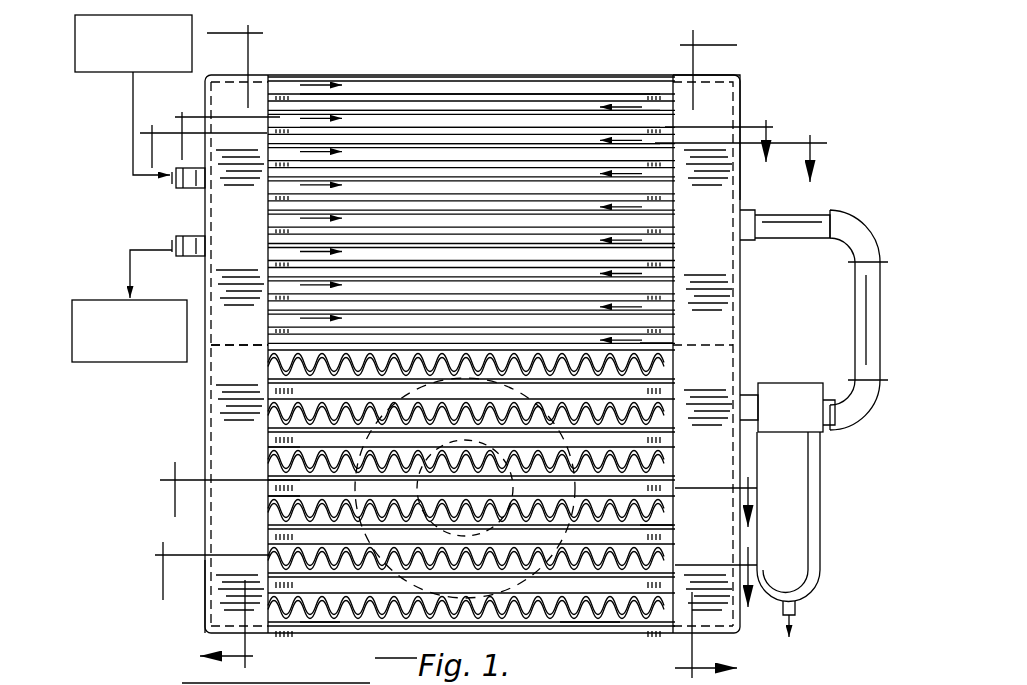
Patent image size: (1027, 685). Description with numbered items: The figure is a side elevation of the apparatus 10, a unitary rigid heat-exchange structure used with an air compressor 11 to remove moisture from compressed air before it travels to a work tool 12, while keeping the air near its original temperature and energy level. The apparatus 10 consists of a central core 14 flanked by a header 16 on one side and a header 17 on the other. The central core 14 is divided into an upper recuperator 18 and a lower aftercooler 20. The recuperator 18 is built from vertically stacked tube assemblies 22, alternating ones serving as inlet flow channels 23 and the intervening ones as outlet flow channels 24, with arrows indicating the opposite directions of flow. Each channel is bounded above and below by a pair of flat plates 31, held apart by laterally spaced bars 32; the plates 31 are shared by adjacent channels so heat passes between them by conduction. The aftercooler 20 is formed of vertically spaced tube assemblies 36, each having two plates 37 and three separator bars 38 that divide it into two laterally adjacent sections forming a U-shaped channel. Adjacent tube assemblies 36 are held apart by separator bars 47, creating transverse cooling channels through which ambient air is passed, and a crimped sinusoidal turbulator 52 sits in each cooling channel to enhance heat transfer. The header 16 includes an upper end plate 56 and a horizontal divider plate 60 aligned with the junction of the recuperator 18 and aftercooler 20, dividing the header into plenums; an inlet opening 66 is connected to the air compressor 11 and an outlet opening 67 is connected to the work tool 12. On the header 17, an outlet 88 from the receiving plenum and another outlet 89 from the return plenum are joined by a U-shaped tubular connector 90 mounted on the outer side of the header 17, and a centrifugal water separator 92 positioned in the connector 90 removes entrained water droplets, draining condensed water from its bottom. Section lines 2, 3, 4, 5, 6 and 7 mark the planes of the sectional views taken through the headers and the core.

The section line 2- 2 is at (246, 348).
The section line 3- 3 is at (692, 356).
The section line 4- 4 is at (471, 124).
The section line 5- 5 is at (483, 138).
The section line 6- 6 is at (458, 480).
The section line 7- 7 is at (456, 560).
The apparatus 10 is at (175, 412).
The air compressor 11 is at (78, 78).
The work tool 12 is at (100, 298).
The central core 14 is at (471, 76).
The header 16 is at (200, 592).
The header 17 is at (746, 72).
The recuperator 18 is at (571, 78).
The aftercooler 20 is at (463, 350).
The tube assemblies 22 is at (396, 118).
The inlet flow channels 23 is at (310, 88).
The outlet flow channels 24 is at (627, 140).
The flat plates 31 is at (538, 112).
The bars 32 is at (488, 190).
The tube assemblies 36 is at (284, 472).
The plates 37 is at (318, 606).
The separator bars 38 is at (590, 555).
The separator bars 47 is at (284, 530).
The turbulator 52 is at (666, 520).
The upper end plate 56 is at (180, 683).
The horizontal divider plate 60 is at (222, 352).
The inlet opening 66 is at (178, 186).
The outlet opening 67 is at (186, 240).
The outlet 88 is at (776, 384).
The outlet 89 is at (742, 238).
The U-shaped tubular connector 90 is at (850, 310).
The centrifugal water separator 92 is at (806, 490).